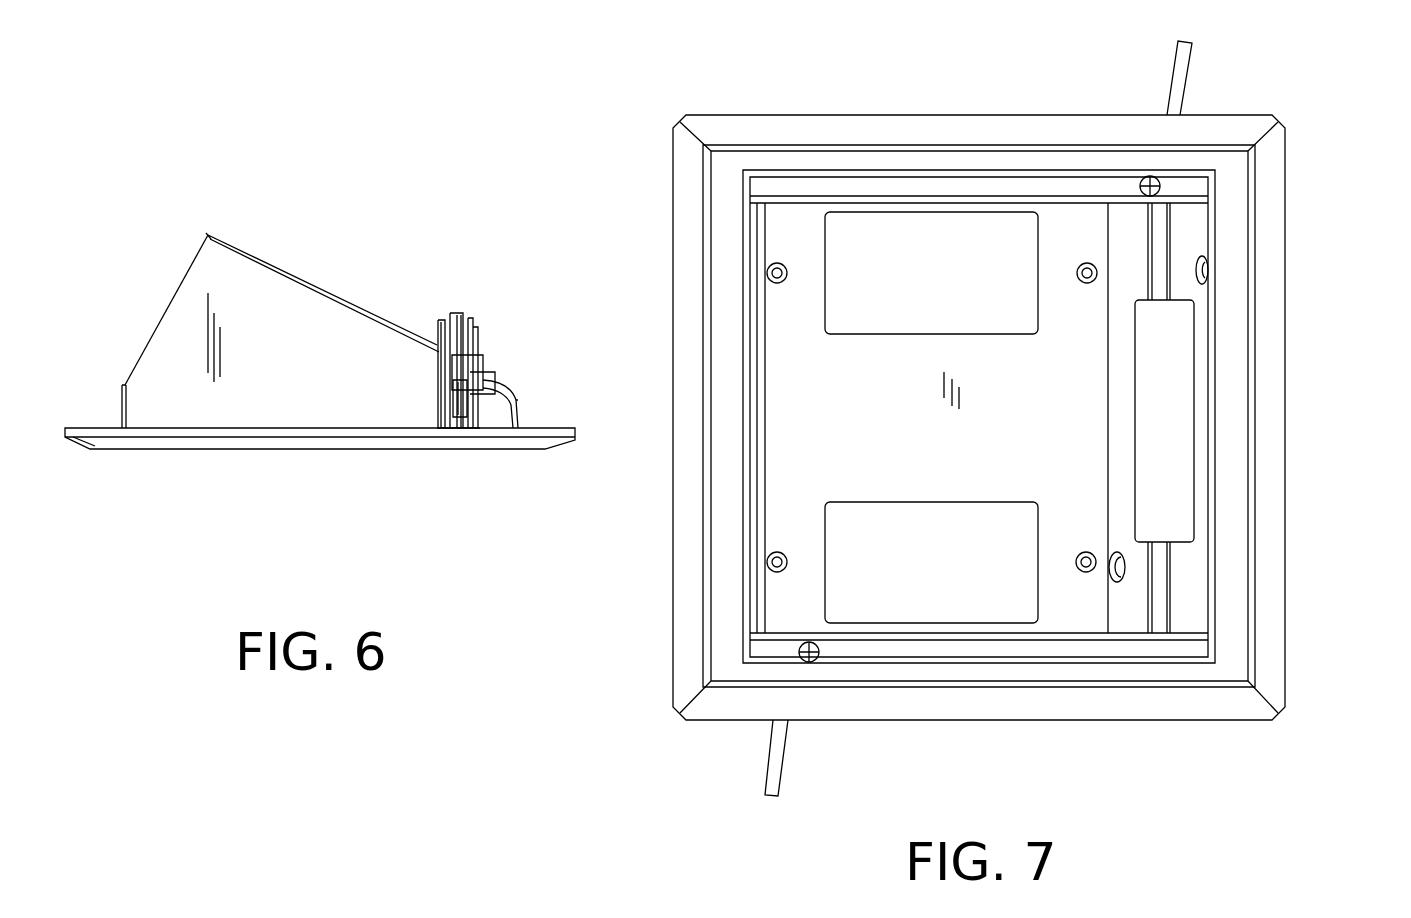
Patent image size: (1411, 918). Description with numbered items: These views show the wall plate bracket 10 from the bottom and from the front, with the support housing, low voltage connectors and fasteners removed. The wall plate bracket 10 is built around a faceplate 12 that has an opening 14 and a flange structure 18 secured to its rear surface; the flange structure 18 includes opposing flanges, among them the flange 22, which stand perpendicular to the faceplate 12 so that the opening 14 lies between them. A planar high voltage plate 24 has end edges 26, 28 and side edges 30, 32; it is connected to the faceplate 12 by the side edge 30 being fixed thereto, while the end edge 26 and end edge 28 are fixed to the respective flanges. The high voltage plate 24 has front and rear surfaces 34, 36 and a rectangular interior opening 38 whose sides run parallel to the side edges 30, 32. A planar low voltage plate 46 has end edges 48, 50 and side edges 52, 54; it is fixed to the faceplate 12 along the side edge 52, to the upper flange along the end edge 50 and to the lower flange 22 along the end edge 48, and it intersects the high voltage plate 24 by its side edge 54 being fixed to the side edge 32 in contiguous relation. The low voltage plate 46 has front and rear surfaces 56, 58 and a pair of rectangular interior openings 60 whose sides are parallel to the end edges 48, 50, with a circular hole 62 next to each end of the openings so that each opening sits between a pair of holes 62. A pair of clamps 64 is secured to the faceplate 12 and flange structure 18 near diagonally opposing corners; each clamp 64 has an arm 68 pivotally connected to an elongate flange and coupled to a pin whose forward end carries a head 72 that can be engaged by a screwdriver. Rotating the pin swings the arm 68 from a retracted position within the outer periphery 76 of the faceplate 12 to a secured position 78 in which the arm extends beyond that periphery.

In FIG. 6, the wall plate bracket 10 is at (217, 452).
In FIG. 7, the wall plate bracket 10 is at (737, 112).
In FIG. 6, the faceplate 12 is at (325, 455).
In FIG. 7, the opening 14 is at (897, 178).
In FIG. 6, the flange structure 18 is at (258, 390).
In FIG. 6, the flange 22 is at (350, 383).
In FIG. 6, the high voltage plate 24 is at (183, 280).
In FIG. 7, the end edge 26 is at (1127, 170).
In FIG. 7, the end edge 28 is at (1128, 633).
In FIG. 6, the side edge 30 is at (123, 385).
In FIG. 7, the side edge 30 is at (1210, 410).
In FIG. 6, the side edge 32 is at (213, 233).
In FIG. 7, the side edge 32 is at (1110, 418).
In FIG. 7, the front surface 34 is at (1190, 600).
In FIG. 6, the rear surface 36 is at (150, 340).
In FIG. 7, the rectangular interior opening 38 is at (1160, 385).
In FIG. 6, the low voltage plate 46 is at (300, 277).
In FIG. 7, the end edge 48 is at (1003, 205).
In FIG. 7, the end edge 50 is at (975, 635).
In FIG. 6, the side edge 52 is at (497, 383).
In FIG. 7, the side edge 52 is at (765, 440).
In FIG. 6, the side edge 54 is at (208, 235).
In FIG. 7, the side edge 54 is at (1112, 506).
In FIG. 7, the front surface 56 is at (874, 366).
In FIG. 6, the rear surface 58 is at (263, 257).
In FIG. 7, the rectangular interior openings 60 is at (860, 215).
In FIG. 7, the circular hole 62 is at (779, 283).
In FIG. 6, the clamps 64 is at (493, 362).
In FIG. 6, the arm 68 is at (437, 355).
In FIG. 7, the arm 68 is at (1185, 88).
In FIG. 7, the head 72 is at (1160, 188).
In FIG. 7, the outer periphery 76 is at (1288, 350).
In FIG. 7, the secured position 78 is at (1170, 68).